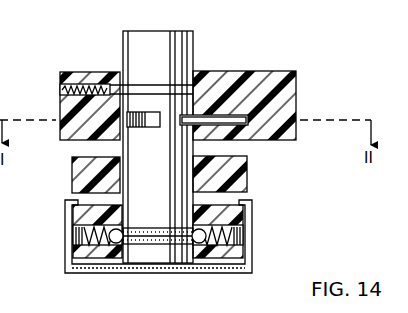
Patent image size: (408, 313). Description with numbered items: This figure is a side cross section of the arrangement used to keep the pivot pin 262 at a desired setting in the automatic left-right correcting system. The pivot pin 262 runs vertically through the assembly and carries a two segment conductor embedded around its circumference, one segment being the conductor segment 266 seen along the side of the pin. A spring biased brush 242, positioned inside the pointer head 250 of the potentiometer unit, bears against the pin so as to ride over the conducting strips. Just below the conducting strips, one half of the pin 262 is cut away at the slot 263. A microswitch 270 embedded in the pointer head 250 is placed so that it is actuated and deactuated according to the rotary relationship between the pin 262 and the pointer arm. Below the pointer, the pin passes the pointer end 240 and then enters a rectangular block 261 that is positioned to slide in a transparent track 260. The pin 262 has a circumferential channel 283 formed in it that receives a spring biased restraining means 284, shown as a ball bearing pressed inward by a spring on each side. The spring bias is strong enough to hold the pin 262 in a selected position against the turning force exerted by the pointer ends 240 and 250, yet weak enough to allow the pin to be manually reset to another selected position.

The pointer end 240 is at (246, 172).
The spring biased brush 242 is at (123, 89).
The pointer head 250 is at (297, 93).
The transparent track 260 is at (253, 249).
The rectangular block 261 is at (238, 258).
The pivot pin 262 is at (123, 52).
The slot 263 is at (154, 125).
The conductor segment 266 is at (163, 88).
The microswitch 270 is at (232, 122).
The circumferential channel 283 is at (152, 238).
The spring biased restraining means 284 is at (175, 228).